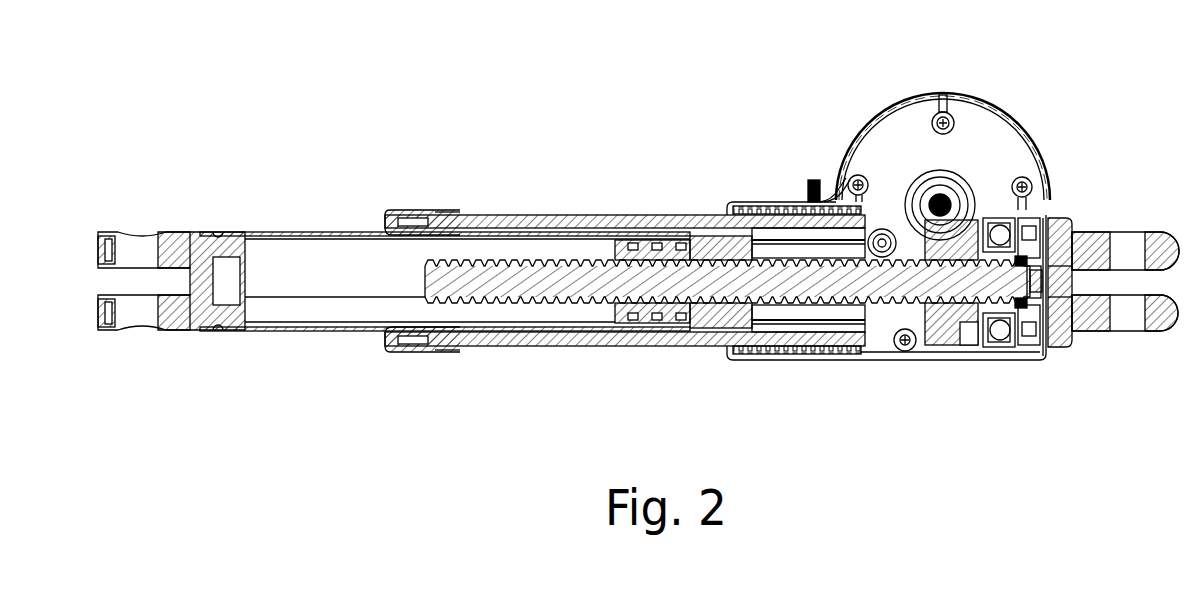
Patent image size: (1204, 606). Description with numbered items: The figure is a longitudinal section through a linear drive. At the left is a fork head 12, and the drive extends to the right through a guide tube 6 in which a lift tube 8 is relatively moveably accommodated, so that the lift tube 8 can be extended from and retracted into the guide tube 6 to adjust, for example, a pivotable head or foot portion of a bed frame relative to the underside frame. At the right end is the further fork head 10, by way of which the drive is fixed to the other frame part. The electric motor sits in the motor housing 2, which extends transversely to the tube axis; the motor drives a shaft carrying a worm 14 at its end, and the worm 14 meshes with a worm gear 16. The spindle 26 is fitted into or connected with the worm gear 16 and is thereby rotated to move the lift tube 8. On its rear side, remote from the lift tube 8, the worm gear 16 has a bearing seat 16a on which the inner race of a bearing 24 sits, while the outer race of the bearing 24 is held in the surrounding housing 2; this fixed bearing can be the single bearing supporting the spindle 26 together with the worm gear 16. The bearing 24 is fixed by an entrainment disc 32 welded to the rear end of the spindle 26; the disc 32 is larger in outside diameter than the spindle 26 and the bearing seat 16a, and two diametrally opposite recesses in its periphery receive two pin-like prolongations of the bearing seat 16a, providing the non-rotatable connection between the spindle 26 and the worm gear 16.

The motor housing 2 is at (846, 112).
The guide tube 6 is at (528, 216).
The lift tube 8 is at (310, 332).
The fork head 10 is at (1090, 330).
The fork head 12 is at (193, 316).
The worm 14 is at (948, 182).
The worm gear 16 is at (943, 352).
The bearing seat 16a is at (1028, 346).
The bearing 24 is at (997, 350).
The spindle 26 is at (538, 283).
The entrainment disc 32 is at (1058, 212).